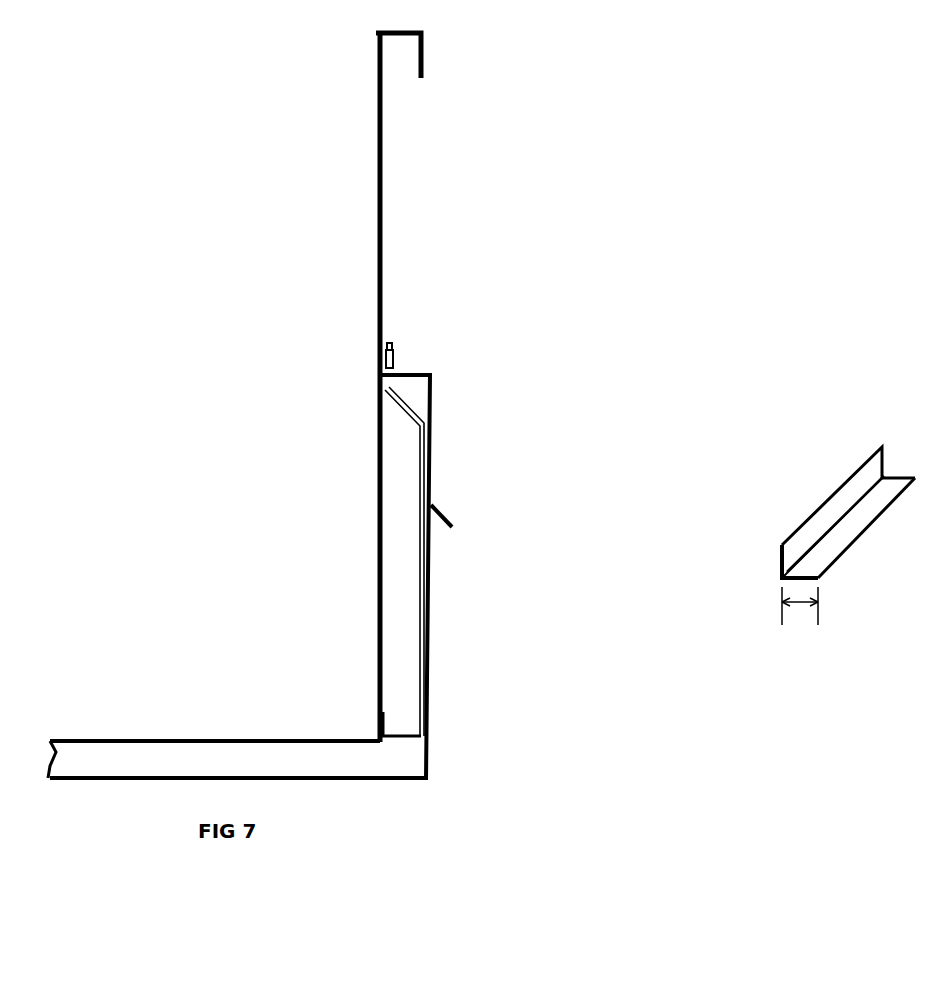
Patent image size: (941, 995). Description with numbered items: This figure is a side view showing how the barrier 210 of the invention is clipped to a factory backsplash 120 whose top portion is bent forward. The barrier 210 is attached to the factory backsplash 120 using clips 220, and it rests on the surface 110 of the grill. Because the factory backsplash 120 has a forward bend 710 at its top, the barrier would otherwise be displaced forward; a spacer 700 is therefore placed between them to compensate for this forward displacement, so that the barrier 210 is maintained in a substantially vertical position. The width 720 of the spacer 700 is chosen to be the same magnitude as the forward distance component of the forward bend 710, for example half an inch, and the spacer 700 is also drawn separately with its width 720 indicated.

The surface of the grill 110 is at (218, 740).
The factory backsplash 120 is at (427, 613).
The barrier 210 is at (376, 143).
The clips 220 is at (433, 405).
The spacer 700 is at (840, 485).
The forward bend 710 is at (392, 412).
The width of the spacer 720 is at (798, 627).